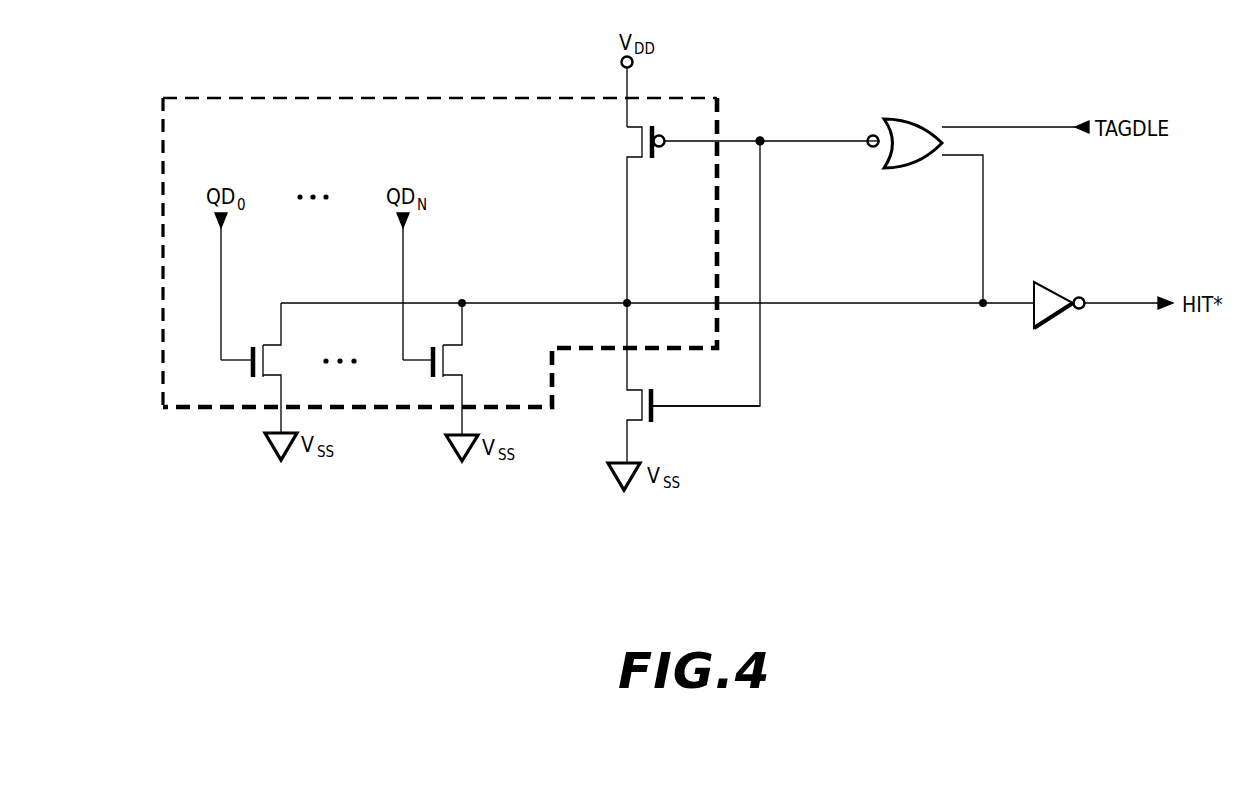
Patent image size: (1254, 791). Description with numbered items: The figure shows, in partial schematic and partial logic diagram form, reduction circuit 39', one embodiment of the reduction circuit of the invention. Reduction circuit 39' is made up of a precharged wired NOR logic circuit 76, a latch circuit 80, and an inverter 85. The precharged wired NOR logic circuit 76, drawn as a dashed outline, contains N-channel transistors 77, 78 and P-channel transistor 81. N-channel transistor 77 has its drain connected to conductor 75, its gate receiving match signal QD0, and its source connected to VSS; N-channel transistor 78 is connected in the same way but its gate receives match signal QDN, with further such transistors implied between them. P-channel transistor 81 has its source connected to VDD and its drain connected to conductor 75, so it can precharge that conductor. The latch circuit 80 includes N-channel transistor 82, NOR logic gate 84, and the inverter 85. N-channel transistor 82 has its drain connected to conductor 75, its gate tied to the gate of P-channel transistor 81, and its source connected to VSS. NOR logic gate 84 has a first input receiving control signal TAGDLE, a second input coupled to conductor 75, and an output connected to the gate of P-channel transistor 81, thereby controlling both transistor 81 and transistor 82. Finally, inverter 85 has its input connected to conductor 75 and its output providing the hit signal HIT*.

The precharged wired NOR logic circuit 76 is at (162, 250).
The conductor 75 is at (546, 302).
The N-channel transistor 77 is at (252, 378).
The N-channel transistor 78 is at (433, 378).
The P-channel transistor 81 is at (654, 158).
The N-channel transistor 82 is at (653, 389).
The NOR logic gate 84 is at (904, 143).
The inverter 85 is at (1078, 309).
The latch circuit 80 is at (781, 447).
The reduction circuit 39' is at (697, 583).